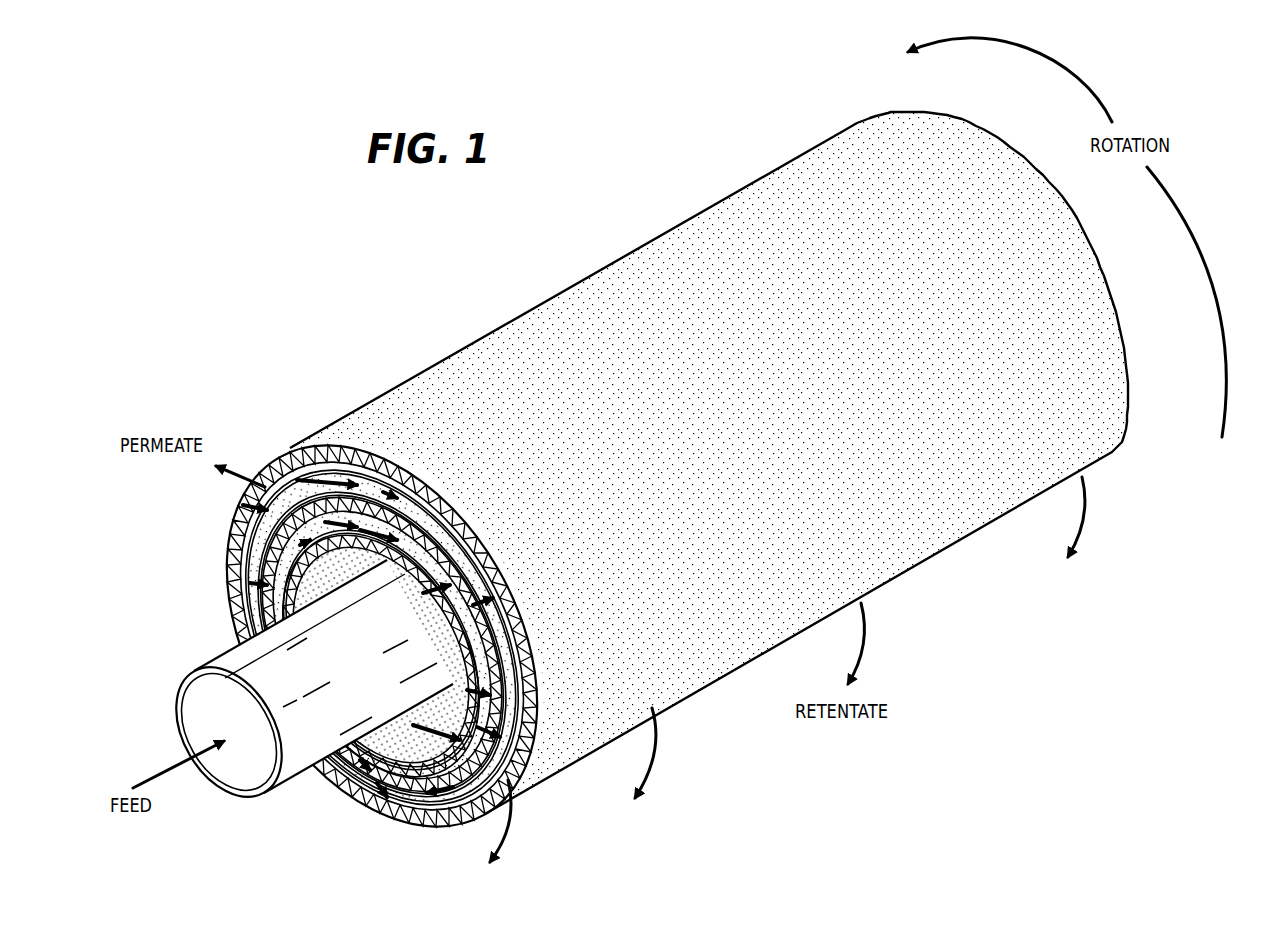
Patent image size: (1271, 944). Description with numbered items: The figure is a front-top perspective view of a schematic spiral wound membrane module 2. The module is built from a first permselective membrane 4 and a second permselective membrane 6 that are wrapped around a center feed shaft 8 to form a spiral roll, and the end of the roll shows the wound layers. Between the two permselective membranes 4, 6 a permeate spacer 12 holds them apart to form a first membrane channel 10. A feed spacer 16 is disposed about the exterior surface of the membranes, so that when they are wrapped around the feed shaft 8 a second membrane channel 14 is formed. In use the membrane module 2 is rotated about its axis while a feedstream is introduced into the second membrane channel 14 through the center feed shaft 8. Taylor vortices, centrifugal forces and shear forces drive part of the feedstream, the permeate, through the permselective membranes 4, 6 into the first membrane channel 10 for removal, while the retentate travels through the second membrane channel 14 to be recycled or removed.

The spiral wound membrane module 2 is at (215, 576).
The first permselective membrane 4 is at (393, 817).
The second permselective membrane 6 is at (385, 803).
The center feed shaft 8 is at (232, 647).
The first membrane channel 10 is at (327, 778).
The permeate spacer 12 is at (345, 782).
The second membrane channel 14 is at (423, 797).
The feed spacer 16 is at (472, 808).